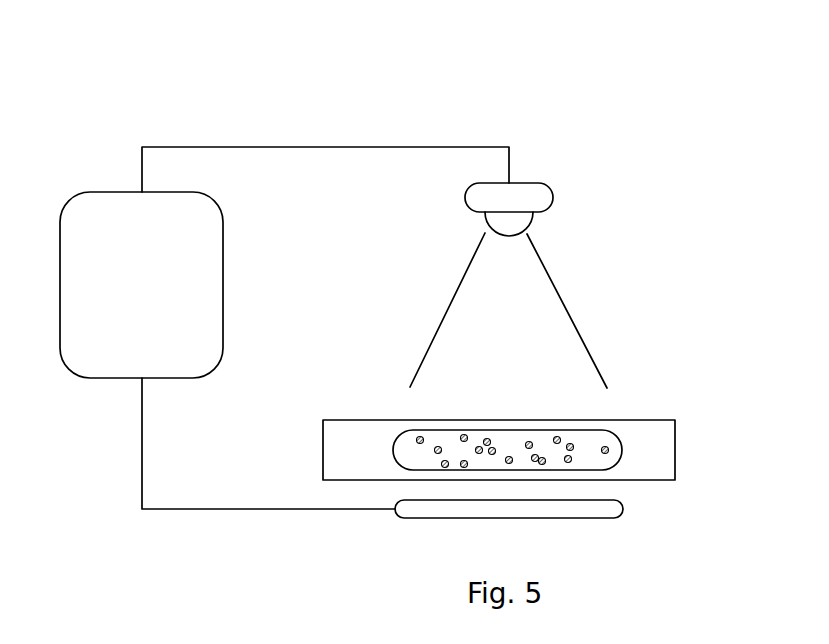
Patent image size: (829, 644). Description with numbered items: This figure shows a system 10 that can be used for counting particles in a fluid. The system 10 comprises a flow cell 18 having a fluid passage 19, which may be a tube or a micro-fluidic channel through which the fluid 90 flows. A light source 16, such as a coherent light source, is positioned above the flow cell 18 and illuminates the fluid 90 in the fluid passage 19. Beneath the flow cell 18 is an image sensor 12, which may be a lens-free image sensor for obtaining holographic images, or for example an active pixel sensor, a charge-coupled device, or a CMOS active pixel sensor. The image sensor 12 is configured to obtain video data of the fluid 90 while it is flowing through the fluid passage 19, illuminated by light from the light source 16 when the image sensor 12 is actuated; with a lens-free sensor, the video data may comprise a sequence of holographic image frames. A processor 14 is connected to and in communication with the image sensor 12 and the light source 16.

The system 10 is at (173, 71).
The image sensor 12 is at (603, 520).
The processor 14 is at (120, 379).
The light source 16 is at (553, 196).
The flow cell 18 is at (677, 465).
The fluid passage 19 is at (612, 430).
The fluid 90 is at (613, 458).